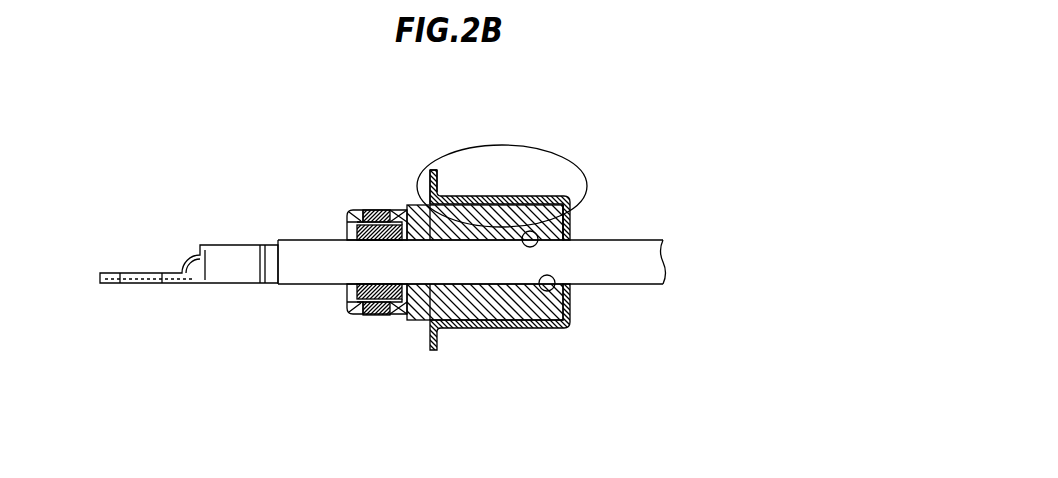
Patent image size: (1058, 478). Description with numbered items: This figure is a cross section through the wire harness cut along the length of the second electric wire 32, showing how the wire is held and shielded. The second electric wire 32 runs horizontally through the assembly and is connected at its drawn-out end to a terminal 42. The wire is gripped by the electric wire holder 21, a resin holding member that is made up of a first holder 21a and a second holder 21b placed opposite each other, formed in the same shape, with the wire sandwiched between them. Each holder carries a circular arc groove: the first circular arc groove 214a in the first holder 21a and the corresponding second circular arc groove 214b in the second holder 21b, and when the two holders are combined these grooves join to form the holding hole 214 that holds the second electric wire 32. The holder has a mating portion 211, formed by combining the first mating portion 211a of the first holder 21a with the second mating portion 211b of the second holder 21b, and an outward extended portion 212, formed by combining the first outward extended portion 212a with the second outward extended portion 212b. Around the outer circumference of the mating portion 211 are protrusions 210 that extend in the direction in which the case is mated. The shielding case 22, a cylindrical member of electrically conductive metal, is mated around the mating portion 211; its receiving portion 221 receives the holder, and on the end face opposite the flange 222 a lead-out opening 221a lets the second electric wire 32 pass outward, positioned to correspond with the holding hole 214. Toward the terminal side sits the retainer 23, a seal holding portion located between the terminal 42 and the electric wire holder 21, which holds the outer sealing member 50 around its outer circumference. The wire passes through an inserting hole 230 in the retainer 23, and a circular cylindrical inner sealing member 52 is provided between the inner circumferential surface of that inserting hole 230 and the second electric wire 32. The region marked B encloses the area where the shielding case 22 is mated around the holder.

The terminal 42 is at (142, 278).
The second electric wire 32 is at (655, 265).
The electric wire holder 21 is at (573, 277).
The first holder 21a is at (594, 295).
The second holder 21b is at (589, 238).
The mating portion 211 is at (483, 320).
The first mating portion 211a is at (526, 226).
The second mating portion 211b is at (519, 303).
The outward extended portion 212 is at (355, 280).
The first outward extended portion 212a is at (365, 300).
The second outward extended portion 212b is at (423, 300).
The holding hole 214 is at (591, 279).
The first circular arc groove 214a is at (546, 226).
The second circular arc groove 214b is at (528, 287).
The protrusion 210 is at (524, 231).
The shielding case 22 is at (515, 238).
The receiving portion 221 is at (553, 201).
The lead-out opening 221a is at (574, 288).
The flange 222 is at (434, 170).
The retainer 23 is at (396, 210).
The outer sealing member 50 is at (377, 209).
The inner sealing member 52 is at (350, 215).
The inserting hole 230 is at (343, 289).
The region B is at (530, 148).